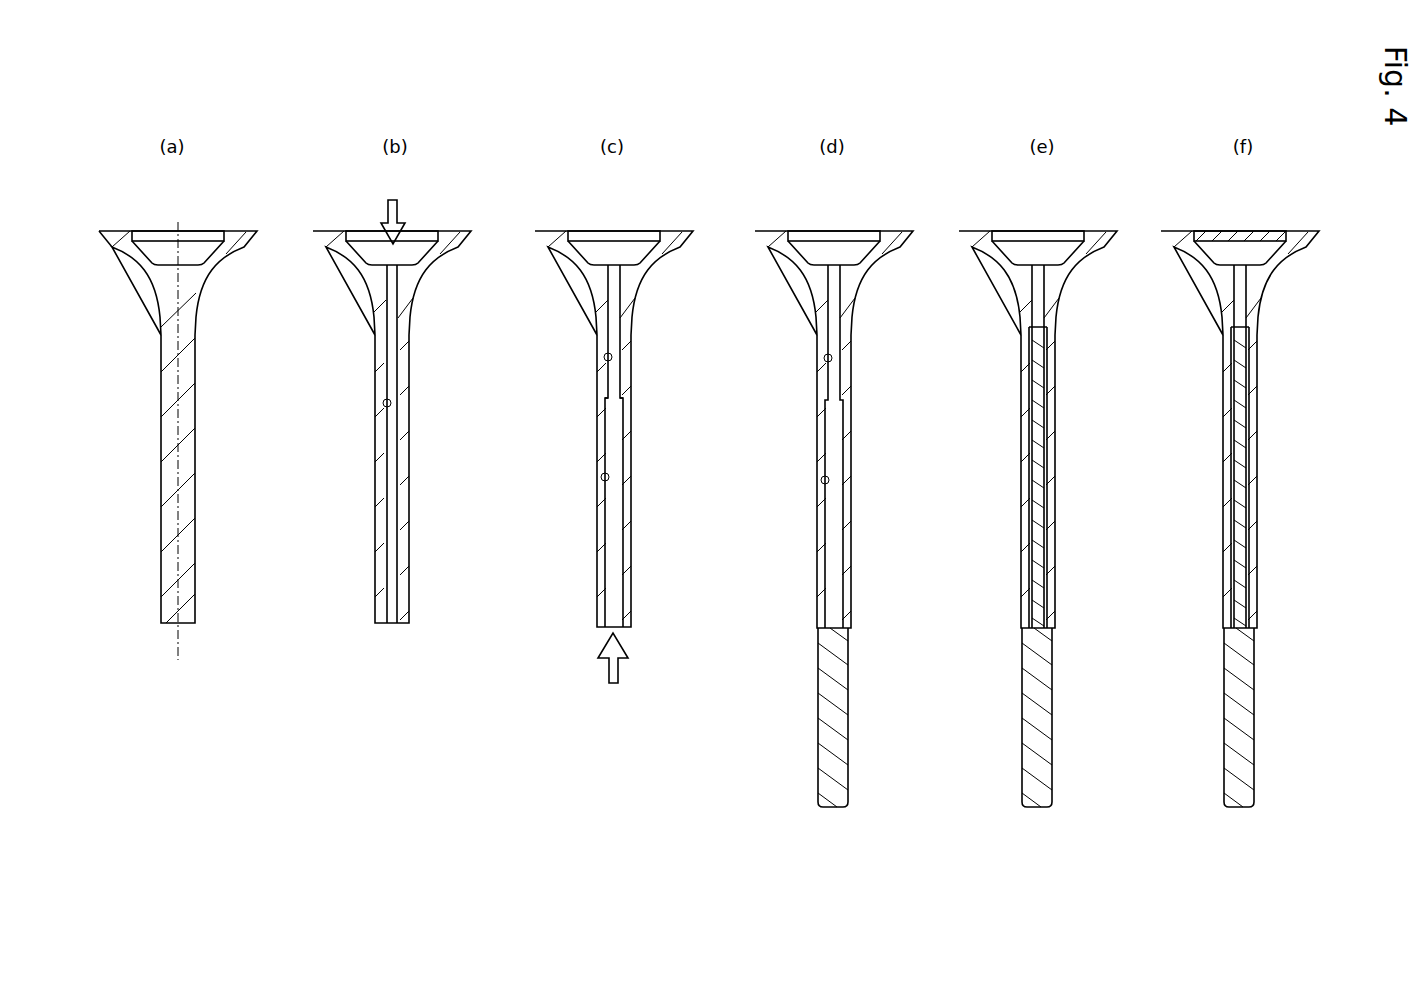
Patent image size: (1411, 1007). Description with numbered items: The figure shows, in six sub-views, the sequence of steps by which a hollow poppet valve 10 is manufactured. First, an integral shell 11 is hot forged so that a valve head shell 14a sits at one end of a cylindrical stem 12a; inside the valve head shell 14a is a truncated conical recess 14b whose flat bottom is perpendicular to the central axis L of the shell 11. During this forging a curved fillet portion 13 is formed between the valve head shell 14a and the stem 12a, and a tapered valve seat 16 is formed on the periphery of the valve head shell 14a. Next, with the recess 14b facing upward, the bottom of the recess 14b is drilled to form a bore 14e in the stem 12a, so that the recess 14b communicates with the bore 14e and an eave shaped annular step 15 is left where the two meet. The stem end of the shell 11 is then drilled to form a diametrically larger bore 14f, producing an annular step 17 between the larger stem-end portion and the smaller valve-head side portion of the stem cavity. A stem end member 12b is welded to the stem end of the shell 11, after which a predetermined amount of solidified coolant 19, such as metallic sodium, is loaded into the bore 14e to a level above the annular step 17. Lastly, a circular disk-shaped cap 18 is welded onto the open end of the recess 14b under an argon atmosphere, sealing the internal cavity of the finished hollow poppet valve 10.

The hollow poppet valve 10 is at (1215, 393).
The shell 11 is at (590, 392).
The stem 12a is at (1258, 362).
The stem end member 12b is at (1255, 685).
The curved fillet portion 13 is at (160, 265).
The valve head shell 14a is at (1293, 252).
The recess 14b is at (1257, 262).
The bore 14e is at (824, 358).
The bore 14f is at (821, 480).
The annular step 15 is at (1236, 268).
The valve seat 16 is at (110, 243).
The annular step 17 is at (624, 400).
The cap 18 is at (1237, 232).
The coolant 19 is at (1246, 440).
The central axis L is at (182, 647).